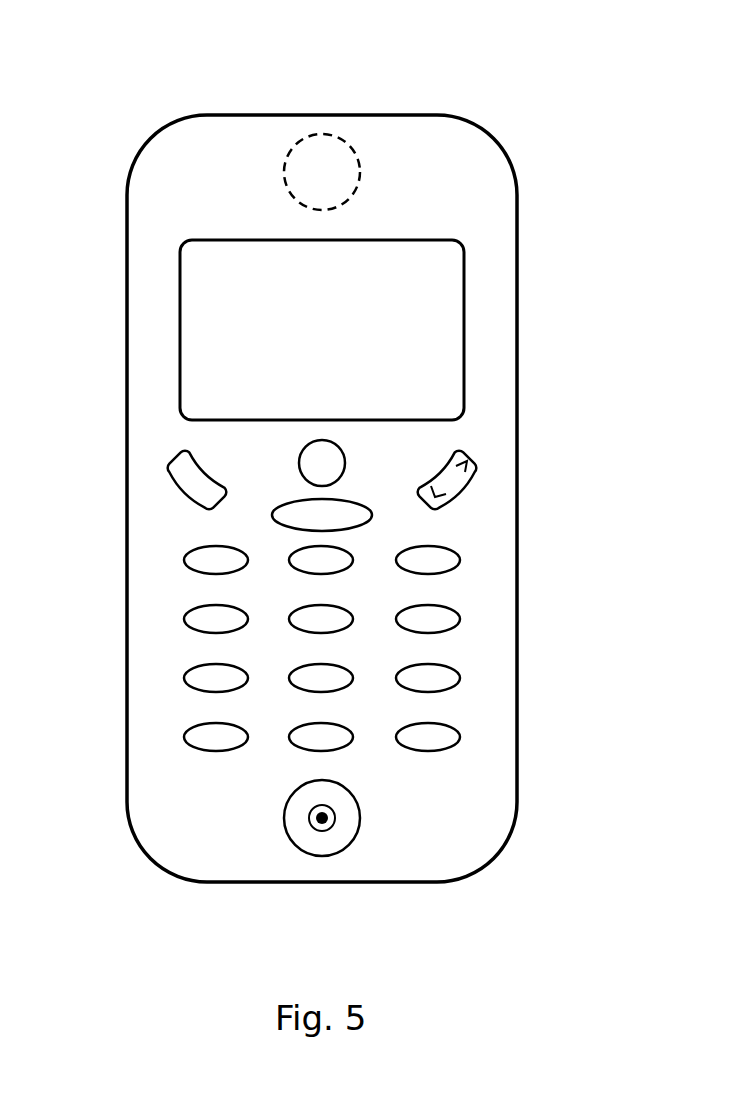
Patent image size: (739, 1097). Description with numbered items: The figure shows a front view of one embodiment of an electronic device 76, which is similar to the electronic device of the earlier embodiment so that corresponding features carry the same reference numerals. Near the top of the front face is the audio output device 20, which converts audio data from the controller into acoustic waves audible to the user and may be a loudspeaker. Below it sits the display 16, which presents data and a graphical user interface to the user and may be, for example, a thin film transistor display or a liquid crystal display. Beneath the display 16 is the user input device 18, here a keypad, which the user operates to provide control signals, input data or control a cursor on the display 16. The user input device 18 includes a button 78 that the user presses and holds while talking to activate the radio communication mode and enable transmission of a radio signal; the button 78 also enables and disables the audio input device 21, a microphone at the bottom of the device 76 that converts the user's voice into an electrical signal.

The electronic device 76 is at (399, 84).
The audio output device 20 is at (298, 142).
The display 16 is at (442, 283).
The button 78 is at (310, 465).
The user input device 18 is at (482, 532).
The audio input device 21 is at (323, 840).